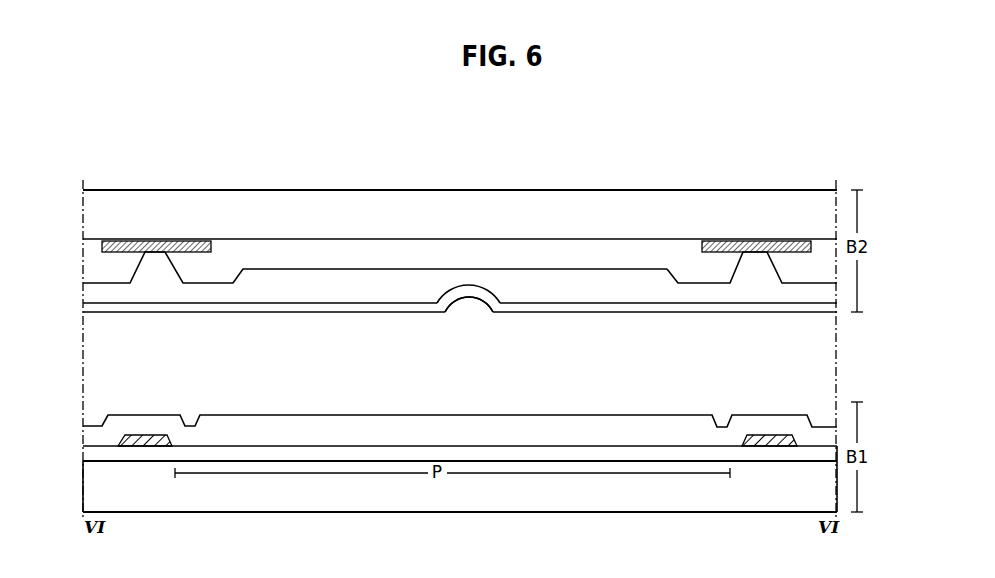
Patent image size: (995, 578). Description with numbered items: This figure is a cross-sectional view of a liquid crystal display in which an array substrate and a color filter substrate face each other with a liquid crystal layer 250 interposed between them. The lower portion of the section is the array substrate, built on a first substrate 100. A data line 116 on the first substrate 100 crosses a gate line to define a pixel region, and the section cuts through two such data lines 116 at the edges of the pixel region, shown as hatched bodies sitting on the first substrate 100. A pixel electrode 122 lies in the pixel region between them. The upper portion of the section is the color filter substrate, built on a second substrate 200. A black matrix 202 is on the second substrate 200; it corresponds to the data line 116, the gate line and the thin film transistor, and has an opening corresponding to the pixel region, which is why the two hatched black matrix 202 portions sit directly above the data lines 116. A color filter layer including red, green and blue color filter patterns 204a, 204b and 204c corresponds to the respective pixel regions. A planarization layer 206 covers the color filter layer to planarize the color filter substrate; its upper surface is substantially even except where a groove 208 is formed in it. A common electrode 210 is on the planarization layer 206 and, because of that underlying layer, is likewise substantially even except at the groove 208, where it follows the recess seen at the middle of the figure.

The first substrate 100 is at (819, 496).
The data line 116 is at (142, 435).
The pixel electrode 122 is at (612, 418).
The second substrate 200 is at (801, 226).
The black matrix 202 is at (152, 251).
The red color filter pattern 204a is at (117, 267).
The green color filter pattern 204b is at (398, 252).
The blue color filter pattern 204c is at (822, 250).
The planarization layer 206 is at (590, 285).
The groove 208 is at (466, 300).
The common electrode 210 is at (295, 313).
The liquid crystal layer 250 is at (807, 359).